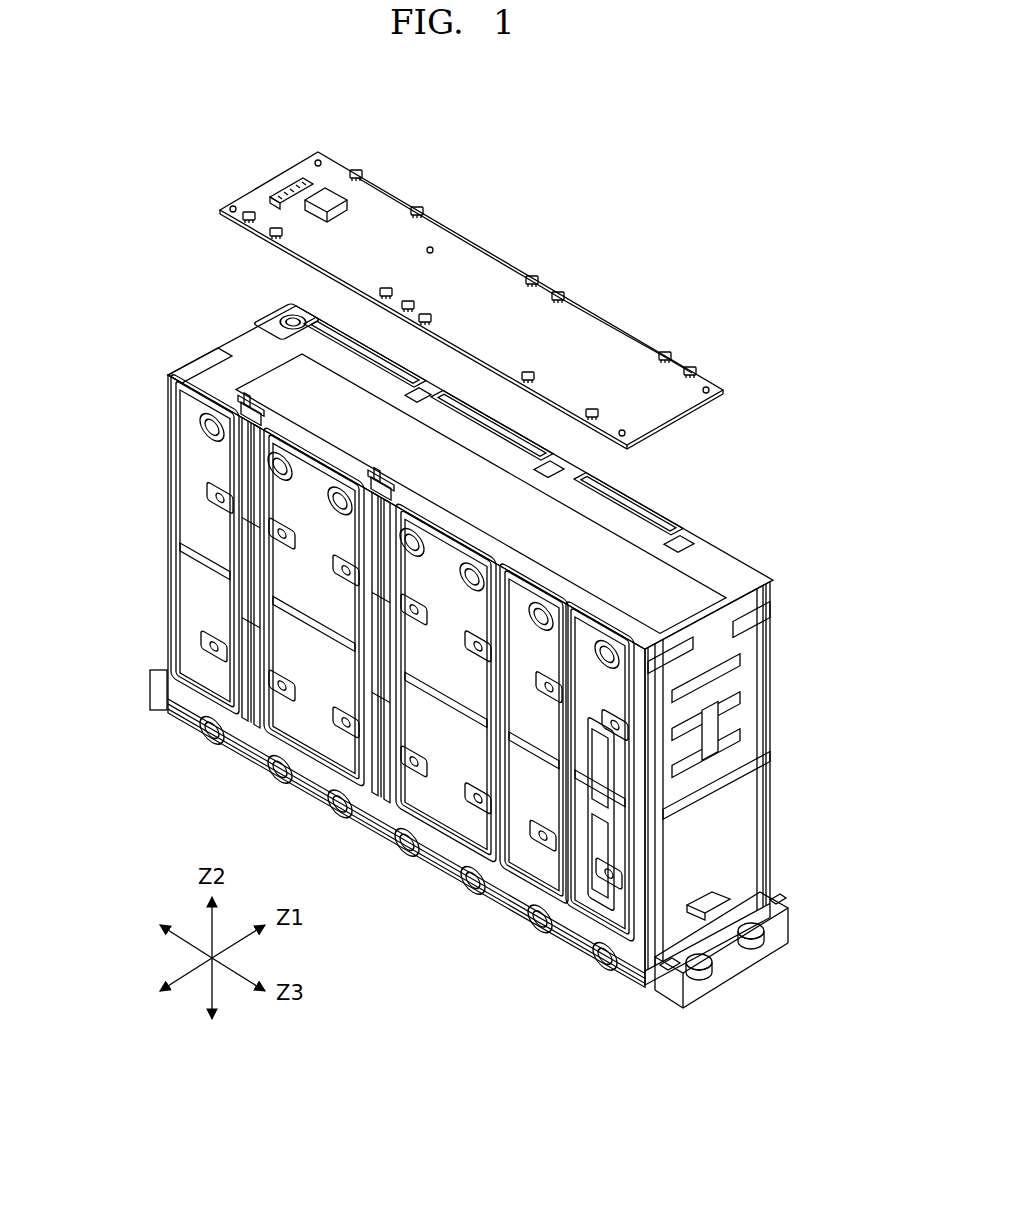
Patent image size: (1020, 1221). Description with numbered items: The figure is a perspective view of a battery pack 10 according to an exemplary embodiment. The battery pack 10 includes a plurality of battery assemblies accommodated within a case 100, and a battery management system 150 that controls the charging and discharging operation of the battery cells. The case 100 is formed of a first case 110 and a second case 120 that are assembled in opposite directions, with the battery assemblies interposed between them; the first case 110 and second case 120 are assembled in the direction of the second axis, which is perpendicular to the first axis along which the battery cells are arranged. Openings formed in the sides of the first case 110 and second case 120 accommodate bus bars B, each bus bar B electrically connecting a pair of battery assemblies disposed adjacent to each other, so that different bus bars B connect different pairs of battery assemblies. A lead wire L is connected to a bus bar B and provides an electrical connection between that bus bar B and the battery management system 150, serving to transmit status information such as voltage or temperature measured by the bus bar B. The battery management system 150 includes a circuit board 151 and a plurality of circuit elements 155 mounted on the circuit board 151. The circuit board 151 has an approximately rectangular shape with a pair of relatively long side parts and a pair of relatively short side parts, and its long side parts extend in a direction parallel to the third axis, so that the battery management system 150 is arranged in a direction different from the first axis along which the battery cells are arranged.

The battery pack 10 is at (422, 710).
The case 100 is at (338, 710).
The first case 110 is at (168, 492).
The second case 120 is at (168, 617).
The battery management system 150 is at (454, 276).
The circuit board 151 is at (470, 257).
The circuit elements 155 is at (338, 192).
The lead wire L is at (262, 633).
The bus bar B is at (245, 668).